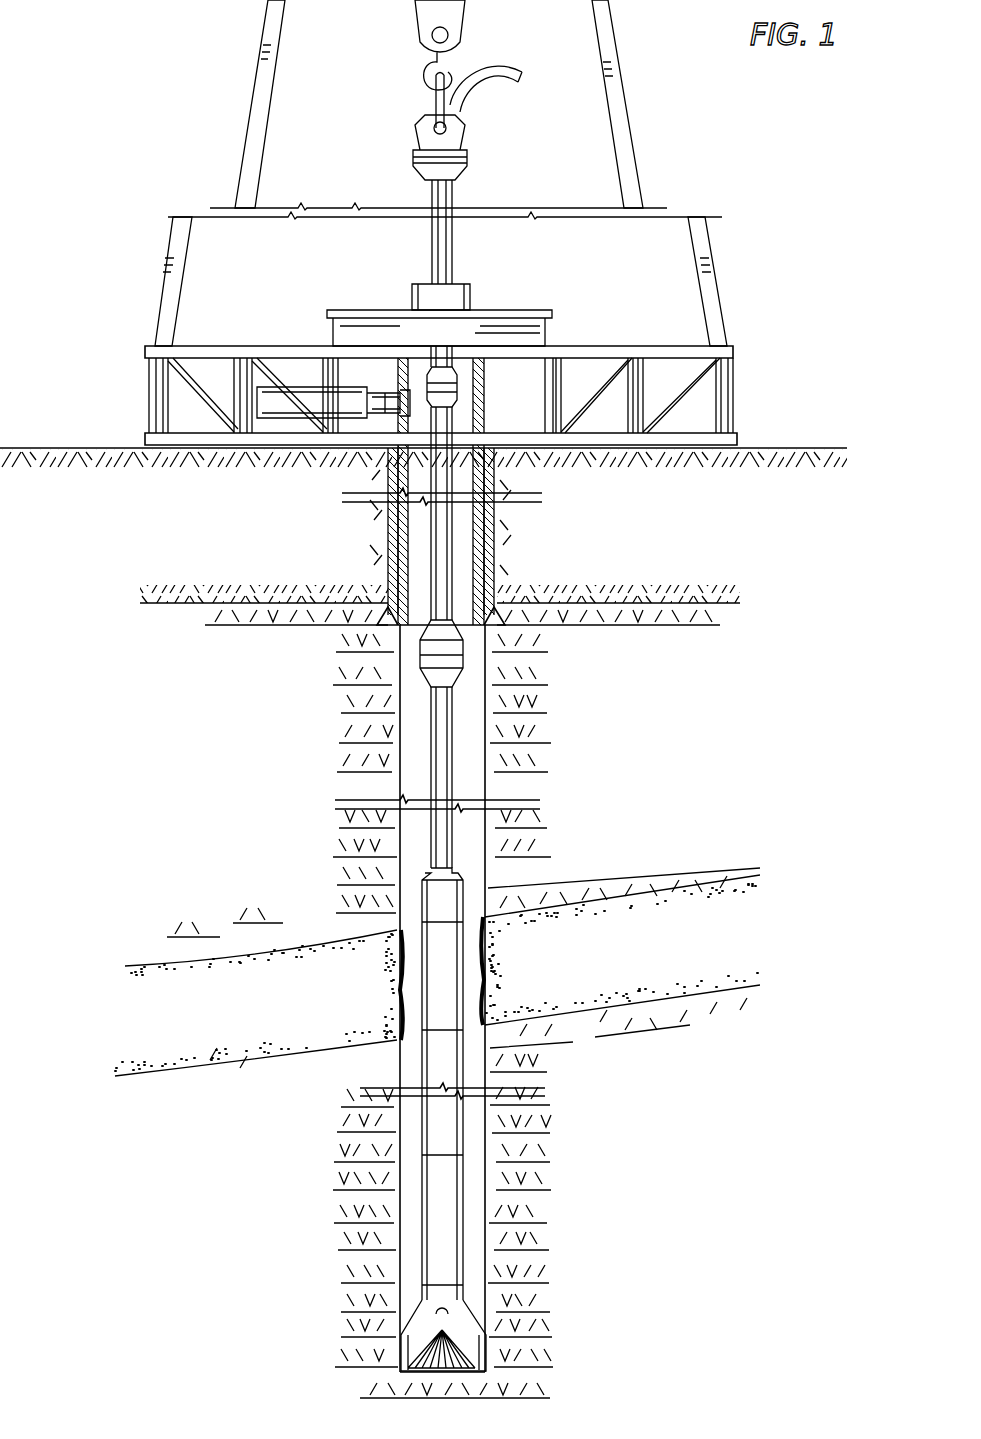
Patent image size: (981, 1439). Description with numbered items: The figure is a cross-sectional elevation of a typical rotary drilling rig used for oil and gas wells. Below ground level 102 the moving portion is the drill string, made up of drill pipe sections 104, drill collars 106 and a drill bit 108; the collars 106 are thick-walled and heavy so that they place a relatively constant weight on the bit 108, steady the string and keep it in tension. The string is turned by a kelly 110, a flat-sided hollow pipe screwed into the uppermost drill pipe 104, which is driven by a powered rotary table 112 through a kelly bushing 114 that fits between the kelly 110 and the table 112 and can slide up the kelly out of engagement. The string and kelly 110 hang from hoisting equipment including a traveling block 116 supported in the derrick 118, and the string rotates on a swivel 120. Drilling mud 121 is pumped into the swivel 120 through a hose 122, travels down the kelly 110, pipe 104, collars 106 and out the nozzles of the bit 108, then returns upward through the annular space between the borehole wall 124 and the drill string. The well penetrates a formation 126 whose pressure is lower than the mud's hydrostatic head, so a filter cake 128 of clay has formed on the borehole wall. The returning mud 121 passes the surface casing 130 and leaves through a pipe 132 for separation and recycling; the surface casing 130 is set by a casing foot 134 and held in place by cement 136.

The ground level 102 is at (799, 447).
The drill pipe sections 104 is at (440, 585).
The drill collars 106 is at (448, 1055).
The drill bit 108 is at (462, 1325).
The kelly 110 is at (455, 197).
The rotary table 112 is at (548, 335).
The kelly bushing 114 is at (424, 283).
The traveling block 116 is at (461, 26).
The derrick 118 is at (633, 127).
The swivel 120 is at (416, 160).
The drilling mud 121 is at (468, 773).
The hose 122 is at (515, 66).
The borehole wall 124 is at (395, 1200).
The formation 126 is at (258, 980).
The filter cake 128 is at (400, 1042).
The surface casing 130 is at (397, 530).
The pipe 132 is at (305, 387).
The casing foot 134 is at (383, 626).
The cement 136 is at (506, 532).